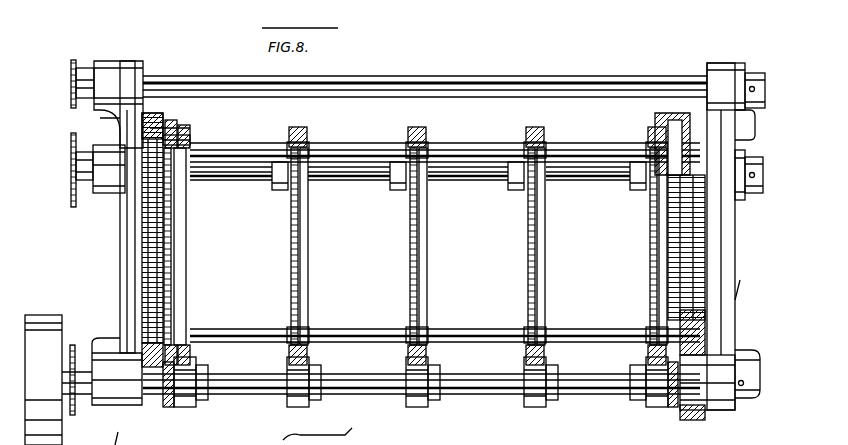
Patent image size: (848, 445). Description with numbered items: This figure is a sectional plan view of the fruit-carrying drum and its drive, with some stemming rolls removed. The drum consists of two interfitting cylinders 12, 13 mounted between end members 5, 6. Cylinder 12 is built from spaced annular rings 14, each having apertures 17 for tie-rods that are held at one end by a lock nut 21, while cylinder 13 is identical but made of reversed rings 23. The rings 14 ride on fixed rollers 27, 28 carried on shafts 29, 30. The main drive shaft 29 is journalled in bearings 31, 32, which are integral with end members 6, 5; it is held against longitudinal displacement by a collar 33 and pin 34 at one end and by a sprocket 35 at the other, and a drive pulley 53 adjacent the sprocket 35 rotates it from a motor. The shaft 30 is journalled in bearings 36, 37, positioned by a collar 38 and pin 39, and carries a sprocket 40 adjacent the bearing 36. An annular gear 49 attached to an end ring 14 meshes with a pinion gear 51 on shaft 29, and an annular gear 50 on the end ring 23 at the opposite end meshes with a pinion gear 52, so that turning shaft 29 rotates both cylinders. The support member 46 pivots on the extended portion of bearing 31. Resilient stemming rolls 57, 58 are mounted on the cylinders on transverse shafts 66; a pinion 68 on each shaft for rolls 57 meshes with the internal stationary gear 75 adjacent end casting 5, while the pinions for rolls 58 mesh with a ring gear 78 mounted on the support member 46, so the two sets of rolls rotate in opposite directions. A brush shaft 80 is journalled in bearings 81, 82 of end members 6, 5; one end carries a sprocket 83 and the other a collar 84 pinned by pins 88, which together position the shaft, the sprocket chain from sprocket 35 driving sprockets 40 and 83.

The end member 5 is at (120, 245).
The end member 6 is at (712, 325).
The cylinder 12 is at (523, 133).
The cylinder 13 is at (548, 134).
The annular ring 14 is at (172, 226).
The aperture 17 is at (394, 436).
The lock nut 21 is at (108, 437).
The annular ring 23 is at (186, 249).
The roller 27 is at (208, 409).
The roller 28 is at (280, 189).
The main drive shaft 29 is at (245, 374).
The shaft 30 is at (204, 180).
The bearing 31 is at (718, 410).
The bearing 32 is at (117, 371).
The collar 33 is at (760, 386).
The pin 34 is at (744, 382).
The sprocket 35 is at (76, 350).
The bearing 36 is at (106, 193).
The bearing 37 is at (745, 150).
The collar 38 is at (763, 168).
The pin 39 is at (763, 181).
The sprocket 40 is at (71, 138).
The support member 46 is at (705, 333).
The annular gear 49 is at (172, 125).
The annular gear 50 is at (678, 236).
The pinion gear 51 is at (170, 408).
The pinion gear 52 is at (670, 408).
The drive pulley 53 is at (38, 315).
The stemming roll 57 is at (240, 143).
The stemming roll 58 is at (350, 328).
The shaft 66 is at (742, 292).
The pinion 68 is at (150, 135).
The internal stationary gear 75 is at (142, 300).
The ring gear 78 is at (688, 180).
The shaft 80 is at (440, 88).
The bearing 81 is at (742, 66).
The bearing 82 is at (128, 62).
The sprocket 83 is at (84, 68).
The collar 84 is at (765, 79).
The pin 88 is at (765, 93).